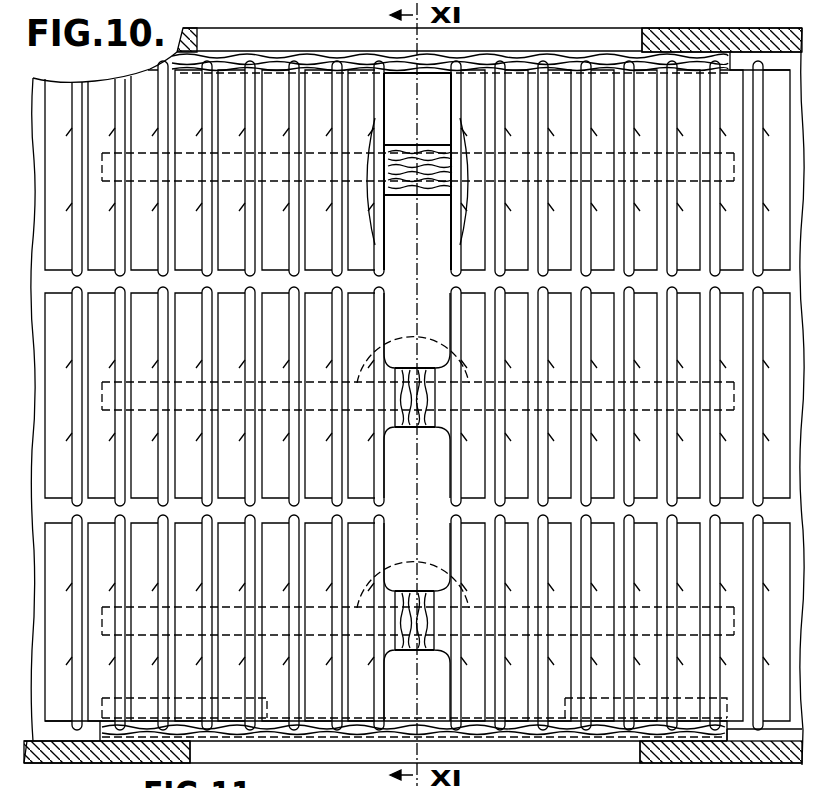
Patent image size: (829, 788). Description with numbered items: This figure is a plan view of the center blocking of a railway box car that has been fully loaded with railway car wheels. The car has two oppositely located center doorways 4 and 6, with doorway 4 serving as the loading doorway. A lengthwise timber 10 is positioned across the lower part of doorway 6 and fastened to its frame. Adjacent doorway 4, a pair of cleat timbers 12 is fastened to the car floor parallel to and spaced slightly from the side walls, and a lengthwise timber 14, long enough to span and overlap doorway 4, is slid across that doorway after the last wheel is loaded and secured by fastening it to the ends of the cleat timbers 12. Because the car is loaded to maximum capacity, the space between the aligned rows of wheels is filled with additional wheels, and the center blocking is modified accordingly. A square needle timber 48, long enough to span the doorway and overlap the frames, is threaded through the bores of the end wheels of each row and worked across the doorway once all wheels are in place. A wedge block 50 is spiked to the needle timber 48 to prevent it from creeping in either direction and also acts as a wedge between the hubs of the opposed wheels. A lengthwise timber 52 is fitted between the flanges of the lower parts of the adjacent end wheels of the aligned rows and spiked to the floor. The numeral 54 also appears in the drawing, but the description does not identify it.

The doorway 4 is at (640, 756).
The doorway 6 is at (642, 30).
The lengthwise timber 10 is at (408, 66).
The cleat timbers 12 is at (180, 698).
The lengthwise timber 14 is at (400, 732).
The needle timber 48 is at (413, 462).
The wedge block 50 is at (418, 429).
The lengthwise timber 52 is at (424, 154).
The end plate 54 is at (428, 778).